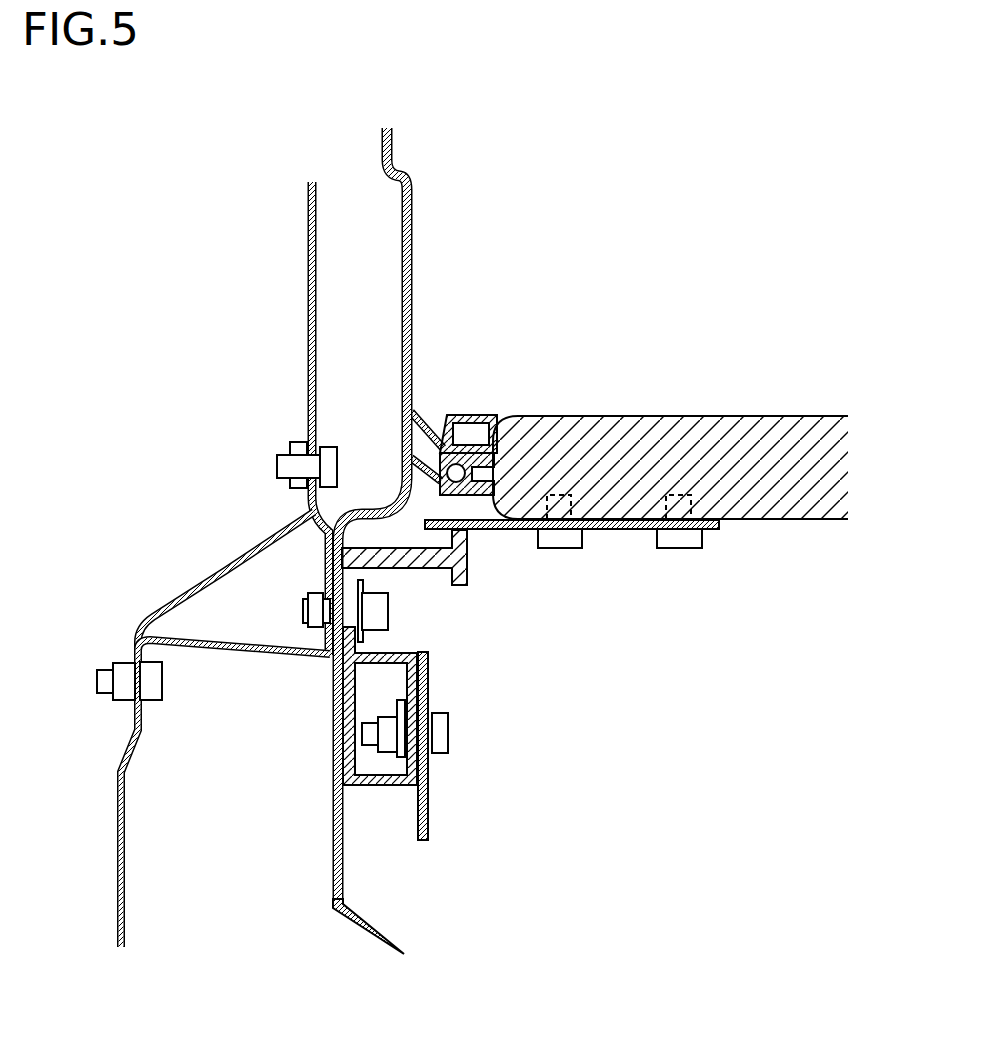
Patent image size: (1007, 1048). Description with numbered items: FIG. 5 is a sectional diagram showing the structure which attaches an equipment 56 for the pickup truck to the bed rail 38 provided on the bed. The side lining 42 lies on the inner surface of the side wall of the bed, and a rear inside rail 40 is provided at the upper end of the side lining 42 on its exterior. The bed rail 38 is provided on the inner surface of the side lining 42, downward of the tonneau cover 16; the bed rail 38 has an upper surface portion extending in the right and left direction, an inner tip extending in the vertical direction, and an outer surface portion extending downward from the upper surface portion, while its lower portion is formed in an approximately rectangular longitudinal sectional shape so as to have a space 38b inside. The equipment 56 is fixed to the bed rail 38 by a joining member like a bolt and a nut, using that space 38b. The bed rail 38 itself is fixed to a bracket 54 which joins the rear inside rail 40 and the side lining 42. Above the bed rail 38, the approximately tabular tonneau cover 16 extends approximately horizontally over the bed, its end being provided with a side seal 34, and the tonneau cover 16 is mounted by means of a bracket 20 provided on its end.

The tonneau cover 16 is at (650, 428).
The bracket 20 is at (618, 530).
The side seal 34 is at (467, 413).
The bed rail 38 is at (410, 558).
The space 38b is at (412, 735).
The rear inside rail 40 is at (307, 292).
The side lining 42 is at (412, 283).
The bracket 54 is at (242, 648).
The equipment 56 is at (428, 800).